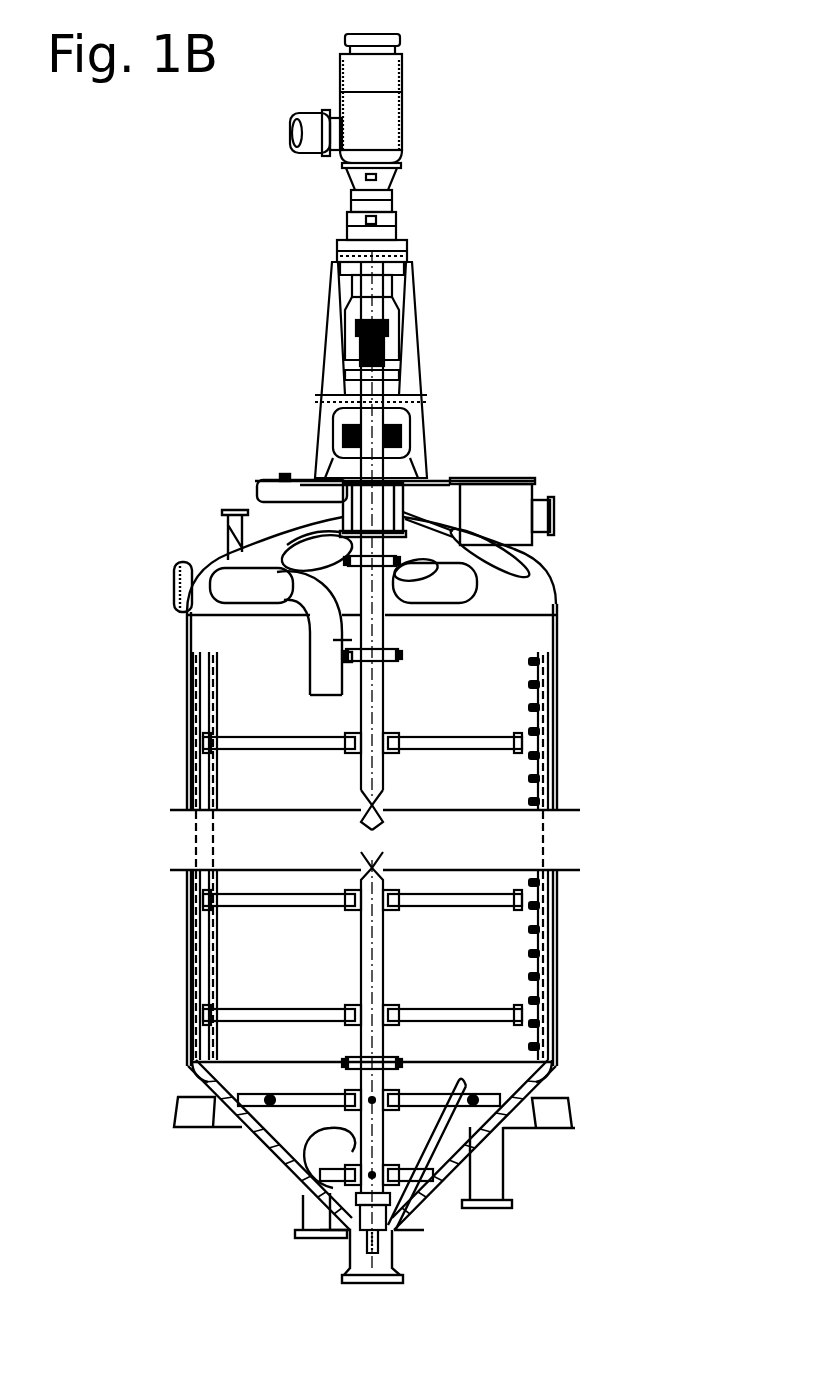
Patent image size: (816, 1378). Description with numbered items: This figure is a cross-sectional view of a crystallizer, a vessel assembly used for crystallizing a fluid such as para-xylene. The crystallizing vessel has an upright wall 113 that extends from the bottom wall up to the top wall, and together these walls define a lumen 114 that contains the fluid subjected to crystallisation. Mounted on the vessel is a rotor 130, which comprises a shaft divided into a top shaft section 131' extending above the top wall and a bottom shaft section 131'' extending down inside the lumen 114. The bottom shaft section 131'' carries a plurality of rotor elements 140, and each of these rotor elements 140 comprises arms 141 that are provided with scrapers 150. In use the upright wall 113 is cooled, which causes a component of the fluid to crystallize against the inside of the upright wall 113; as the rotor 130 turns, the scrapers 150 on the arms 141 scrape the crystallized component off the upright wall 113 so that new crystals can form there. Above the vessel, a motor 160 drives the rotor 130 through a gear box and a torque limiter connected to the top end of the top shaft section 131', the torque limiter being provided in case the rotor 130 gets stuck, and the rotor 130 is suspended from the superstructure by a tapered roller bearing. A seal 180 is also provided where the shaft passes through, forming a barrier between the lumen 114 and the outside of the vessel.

The motor 160 is at (383, 133).
The seal 180 is at (387, 448).
The top shaft section 131' is at (518, 540).
The bottom shaft section 131'' is at (520, 1062).
The rotor 130 is at (420, 715).
The lumen 114 is at (287, 787).
The upright wall 113 is at (557, 997).
The scrapers 150 is at (548, 784).
The arms 141 is at (458, 1017).
The rotor elements 140 is at (282, 995).